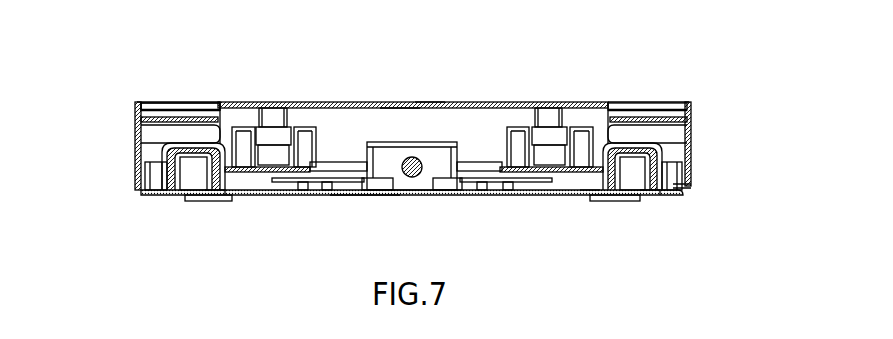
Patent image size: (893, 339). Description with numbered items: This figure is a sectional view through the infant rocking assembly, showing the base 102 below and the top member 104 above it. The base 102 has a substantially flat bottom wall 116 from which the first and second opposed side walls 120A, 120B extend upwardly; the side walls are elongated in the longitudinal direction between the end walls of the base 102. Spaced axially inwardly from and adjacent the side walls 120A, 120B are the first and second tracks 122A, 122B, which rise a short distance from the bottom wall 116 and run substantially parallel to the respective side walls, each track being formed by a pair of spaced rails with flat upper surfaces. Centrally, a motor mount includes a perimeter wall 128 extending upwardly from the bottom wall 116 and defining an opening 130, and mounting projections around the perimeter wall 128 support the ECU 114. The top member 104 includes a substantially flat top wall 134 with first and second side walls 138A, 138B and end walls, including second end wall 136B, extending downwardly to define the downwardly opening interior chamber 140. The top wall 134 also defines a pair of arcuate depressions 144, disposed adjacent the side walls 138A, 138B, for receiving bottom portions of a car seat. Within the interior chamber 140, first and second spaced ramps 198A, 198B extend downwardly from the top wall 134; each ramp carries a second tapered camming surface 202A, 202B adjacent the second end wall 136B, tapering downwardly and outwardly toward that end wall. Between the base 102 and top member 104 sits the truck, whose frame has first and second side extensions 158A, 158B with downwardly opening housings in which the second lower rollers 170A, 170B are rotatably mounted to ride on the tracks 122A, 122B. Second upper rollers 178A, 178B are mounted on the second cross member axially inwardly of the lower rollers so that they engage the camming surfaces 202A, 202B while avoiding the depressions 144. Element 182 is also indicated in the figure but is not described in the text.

The base 102 is at (148, 200).
The top member 104 is at (136, 106).
The ECU 114 is at (302, 200).
The bottom wall 116 is at (360, 200).
The first side wall 120A is at (147, 190).
The second side wall 120B is at (683, 187).
The first track 122A is at (192, 202).
The second track 122B is at (643, 202).
The perimeter wall 128 is at (442, 192).
The opening 130 is at (418, 198).
The top wall 134 is at (365, 102).
The second end wall 136B is at (497, 136).
The first side wall 138A is at (134, 131).
The second side wall 138B is at (697, 120).
The interior chamber 140 is at (399, 103).
The arcuate depressions 144 is at (168, 103).
The first side extension 158A is at (157, 200).
The second side extension 158B is at (587, 200).
The second lower roller 170A is at (216, 201).
The second lower roller 170B is at (648, 197).
The second upper roller 178A is at (266, 135).
The second upper roller 178B is at (547, 135).
The aperture 182 is at (428, 103).
The first ramp 198A is at (288, 117).
The second ramp 198B is at (532, 113).
The second tapered camming surface 202A is at (257, 108).
The second tapered camming surface 202B is at (575, 108).